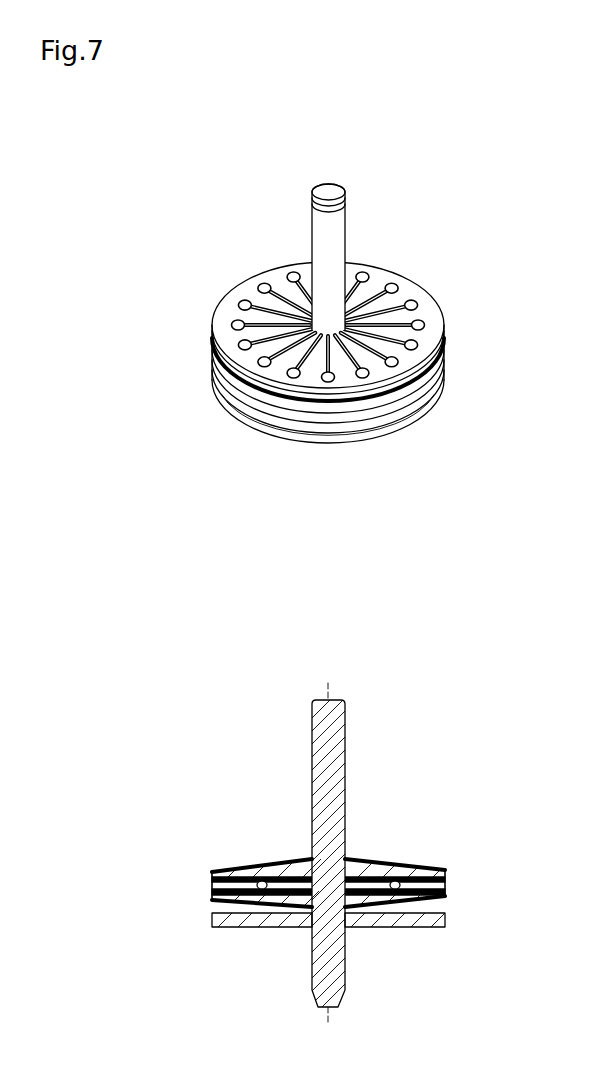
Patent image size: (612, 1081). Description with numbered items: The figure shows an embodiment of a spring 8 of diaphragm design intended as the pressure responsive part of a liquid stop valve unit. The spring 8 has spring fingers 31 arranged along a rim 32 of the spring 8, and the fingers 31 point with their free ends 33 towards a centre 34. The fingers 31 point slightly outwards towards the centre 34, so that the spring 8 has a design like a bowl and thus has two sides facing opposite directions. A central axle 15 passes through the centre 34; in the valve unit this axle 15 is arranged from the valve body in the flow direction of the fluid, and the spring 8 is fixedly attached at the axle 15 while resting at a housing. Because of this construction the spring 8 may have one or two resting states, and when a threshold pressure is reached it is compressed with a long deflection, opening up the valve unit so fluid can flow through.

The spring 8 is at (235, 253).
The central axle 15 is at (333, 242).
The spring fingers 31 is at (267, 338).
The rim 32 is at (430, 305).
The free ends 33 is at (365, 298).
The centre 34 is at (255, 300).